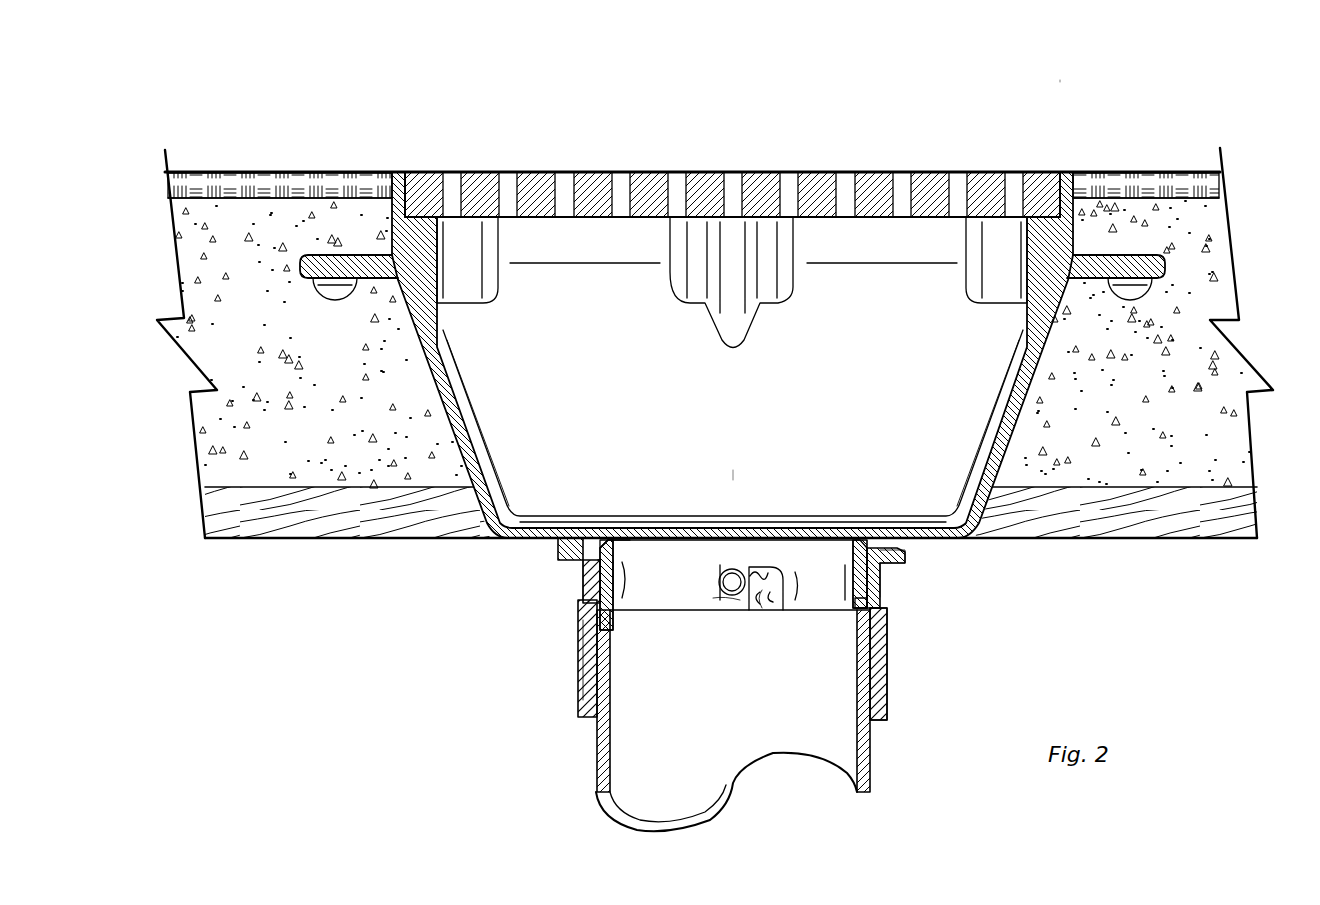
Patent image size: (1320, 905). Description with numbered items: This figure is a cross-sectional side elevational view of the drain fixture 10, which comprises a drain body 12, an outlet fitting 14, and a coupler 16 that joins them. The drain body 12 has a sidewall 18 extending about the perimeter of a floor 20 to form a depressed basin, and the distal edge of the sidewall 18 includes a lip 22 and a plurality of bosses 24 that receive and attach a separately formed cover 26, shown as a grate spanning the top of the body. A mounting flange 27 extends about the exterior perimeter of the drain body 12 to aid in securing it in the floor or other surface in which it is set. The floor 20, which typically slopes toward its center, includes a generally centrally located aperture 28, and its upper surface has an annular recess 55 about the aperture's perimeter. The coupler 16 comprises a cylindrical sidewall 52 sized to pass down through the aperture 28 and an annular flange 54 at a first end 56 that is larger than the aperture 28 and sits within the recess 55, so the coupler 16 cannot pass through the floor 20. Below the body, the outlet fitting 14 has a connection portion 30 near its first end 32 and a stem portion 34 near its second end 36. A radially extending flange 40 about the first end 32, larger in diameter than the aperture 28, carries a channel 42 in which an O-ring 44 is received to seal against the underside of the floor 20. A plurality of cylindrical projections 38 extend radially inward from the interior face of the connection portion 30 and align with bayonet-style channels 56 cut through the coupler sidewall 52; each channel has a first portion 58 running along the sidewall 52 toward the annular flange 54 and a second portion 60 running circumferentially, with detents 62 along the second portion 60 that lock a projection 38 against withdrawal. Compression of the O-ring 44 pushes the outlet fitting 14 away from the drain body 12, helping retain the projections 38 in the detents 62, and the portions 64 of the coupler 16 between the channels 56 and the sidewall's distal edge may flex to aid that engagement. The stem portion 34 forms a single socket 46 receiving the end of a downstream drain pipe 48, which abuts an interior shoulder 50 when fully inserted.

The drain fixture 10 is at (1055, 75).
The drain body 12 is at (829, 356).
The outlet fitting 14 is at (745, 715).
The coupler 16 is at (697, 556).
The sidewall 18 is at (1003, 413).
The floor 20 is at (540, 535).
The lip 22 is at (412, 200).
The bosses 24 is at (695, 245).
The cover 26 is at (868, 162).
The mounting flange 27 is at (1163, 270).
The aperture 28 is at (757, 478).
The connection portion 30 is at (885, 585).
The first end 32 is at (907, 553).
The stem portion 34 is at (885, 690).
The second end 36 is at (880, 725).
The projections 38 is at (722, 578).
The flange 40 is at (558, 553).
The channel 42 is at (580, 562).
The O-ring 44 is at (583, 535).
The socket 46 is at (882, 658).
The pipe 48 is at (870, 785).
The shoulder 50 is at (885, 603).
The cylindrical sidewall 52 is at (660, 600).
The annular flange 54 is at (600, 538).
The annular recess 55 is at (605, 538).
The channels 56 is at (622, 573).
The first portion 58 is at (780, 600).
The second portion 60 is at (765, 570).
The detents 62 is at (760, 620).
The portions 64 is at (580, 648).